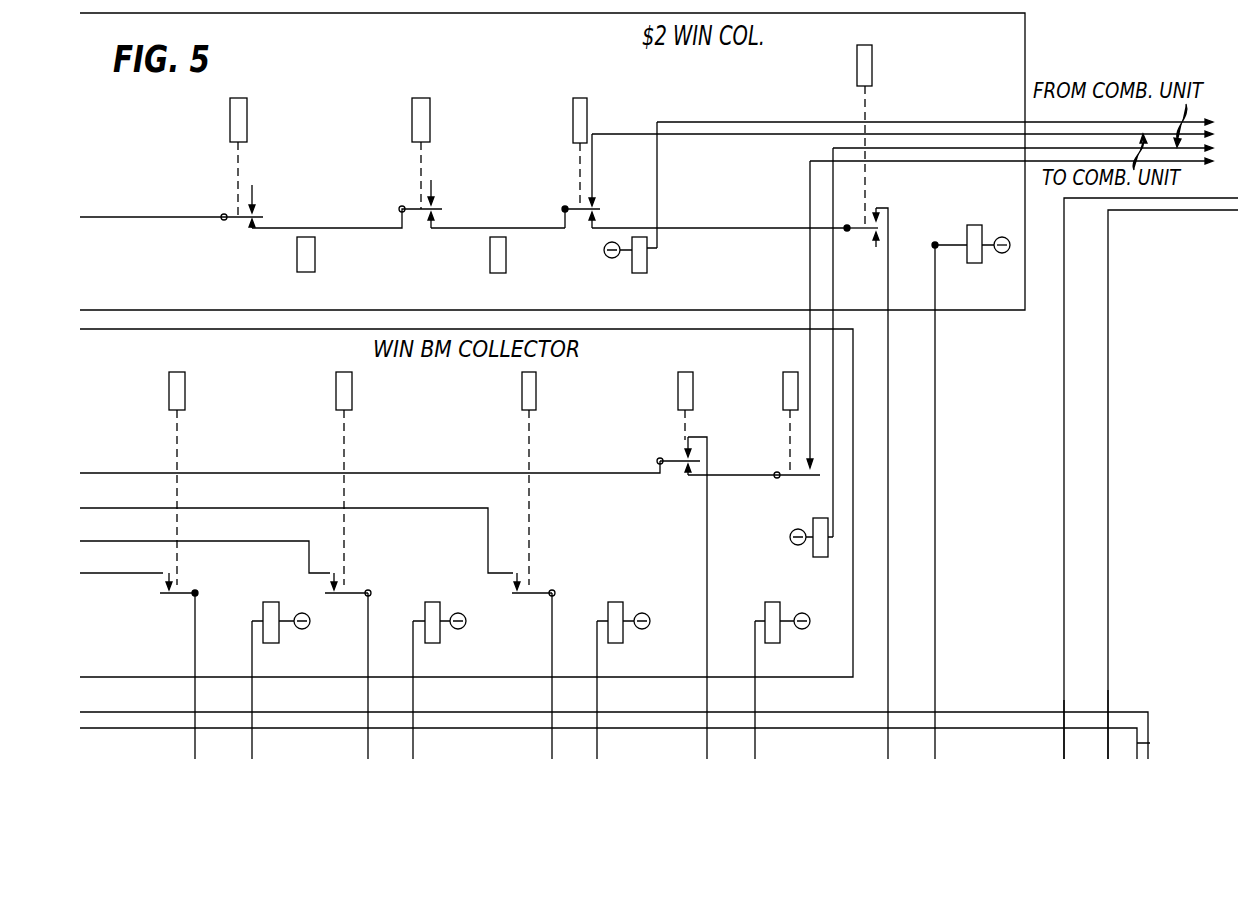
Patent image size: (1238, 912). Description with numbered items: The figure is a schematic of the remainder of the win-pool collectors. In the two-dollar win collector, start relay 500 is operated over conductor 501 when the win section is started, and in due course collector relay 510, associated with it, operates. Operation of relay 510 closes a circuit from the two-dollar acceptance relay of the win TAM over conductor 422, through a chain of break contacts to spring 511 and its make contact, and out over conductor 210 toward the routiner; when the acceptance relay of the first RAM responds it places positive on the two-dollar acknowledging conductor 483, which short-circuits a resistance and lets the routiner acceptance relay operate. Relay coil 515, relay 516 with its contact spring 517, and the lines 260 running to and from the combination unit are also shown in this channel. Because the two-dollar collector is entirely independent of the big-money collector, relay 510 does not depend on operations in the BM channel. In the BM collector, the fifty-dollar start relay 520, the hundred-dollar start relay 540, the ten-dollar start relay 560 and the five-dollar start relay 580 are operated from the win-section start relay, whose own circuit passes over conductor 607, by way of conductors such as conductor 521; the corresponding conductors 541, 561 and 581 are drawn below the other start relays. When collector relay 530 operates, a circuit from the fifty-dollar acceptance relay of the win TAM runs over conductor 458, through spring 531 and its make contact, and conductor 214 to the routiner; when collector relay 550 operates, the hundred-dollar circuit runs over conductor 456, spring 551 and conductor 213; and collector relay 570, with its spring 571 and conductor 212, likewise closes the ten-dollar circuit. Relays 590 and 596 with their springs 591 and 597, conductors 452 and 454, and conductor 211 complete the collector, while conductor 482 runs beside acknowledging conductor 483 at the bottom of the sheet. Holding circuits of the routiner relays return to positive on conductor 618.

The conductor 422 is at (143, 216).
The collector relay 510 is at (880, 42).
The spring 511 is at (858, 233).
The relay coil 515 is at (647, 255).
The relay 516 is at (593, 95).
The relay contact 517 is at (575, 207).
The lines to/from combination unit 260 is at (762, 135).
The start relay 500 is at (975, 232).
The conductor 501 is at (936, 733).
The conductor 210 is at (889, 733).
The lead 211 is at (708, 733).
The lead 212 is at (553, 733).
The conductor 213 is at (369, 733).
The conductor 214 is at (196, 733).
The collector relay 530 is at (183, 385).
The spring 531 is at (181, 586).
The collector relay 550 is at (350, 385).
The spring 551 is at (346, 586).
The collector relay 570 is at (534, 385).
The relay contact 571 is at (528, 586).
The relay 590 is at (690, 382).
The relay contact 591 is at (676, 458).
The relay 596 is at (802, 366).
The relay contact 597 is at (803, 478).
The line 452 is at (139, 472).
The line 454 is at (139, 507).
The conductor 456 is at (139, 540).
The conductor 458 is at (139, 573).
The start relay 520 is at (270, 612).
The conductor 521 is at (253, 733).
The start relay 540 is at (434, 612).
The lead 541 is at (414, 733).
The start relay 560 is at (618, 612).
The lead 561 is at (598, 733).
The start relay 580 is at (781, 606).
The lead 581 is at (756, 733).
The line 482 is at (143, 708).
The acknowledging conductor 483 is at (141, 730).
The conductor 607 is at (1065, 733).
The conductor 618 is at (1108, 697).